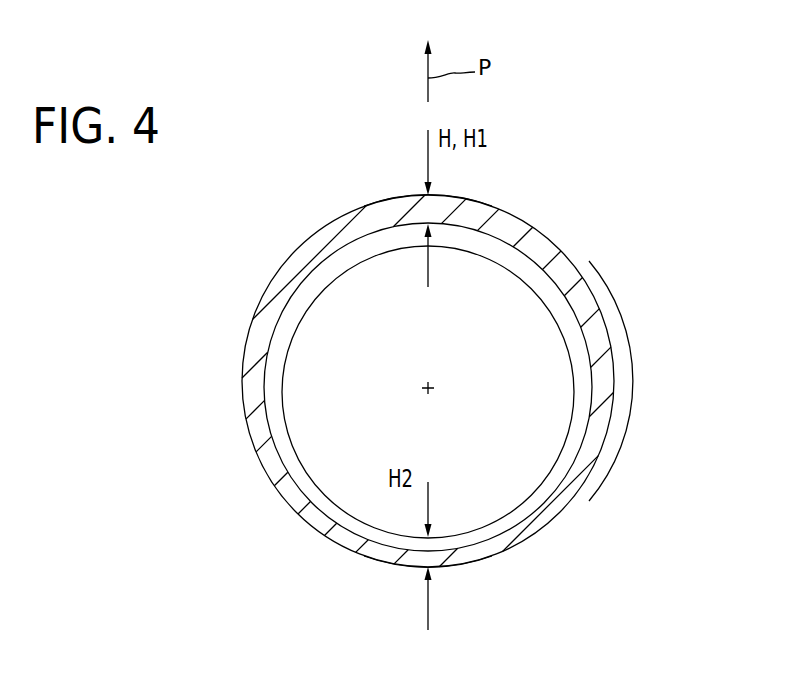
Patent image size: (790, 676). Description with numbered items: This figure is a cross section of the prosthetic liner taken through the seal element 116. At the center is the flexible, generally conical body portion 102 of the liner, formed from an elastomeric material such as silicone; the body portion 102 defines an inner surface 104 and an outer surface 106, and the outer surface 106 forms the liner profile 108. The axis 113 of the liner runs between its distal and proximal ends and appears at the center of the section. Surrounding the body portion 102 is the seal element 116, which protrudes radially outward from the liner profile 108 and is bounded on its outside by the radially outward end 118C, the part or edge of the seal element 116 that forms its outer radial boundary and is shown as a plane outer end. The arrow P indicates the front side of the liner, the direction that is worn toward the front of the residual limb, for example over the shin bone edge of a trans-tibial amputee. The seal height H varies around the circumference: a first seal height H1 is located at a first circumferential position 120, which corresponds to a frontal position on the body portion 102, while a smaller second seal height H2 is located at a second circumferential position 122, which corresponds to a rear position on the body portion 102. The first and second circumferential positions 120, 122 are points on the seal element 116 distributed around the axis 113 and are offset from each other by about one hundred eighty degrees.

The body portion 102 is at (428, 392).
The inner surface 104 is at (547, 480).
The outer surface 106 is at (428, 387).
The liner profile 108 is at (312, 274).
The axis 113 is at (425, 390).
The seal element 116 is at (610, 285).
The radially outward end 118C is at (293, 250).
The first circumferential position 120 is at (425, 195).
The second circumferential position 122 is at (432, 567).